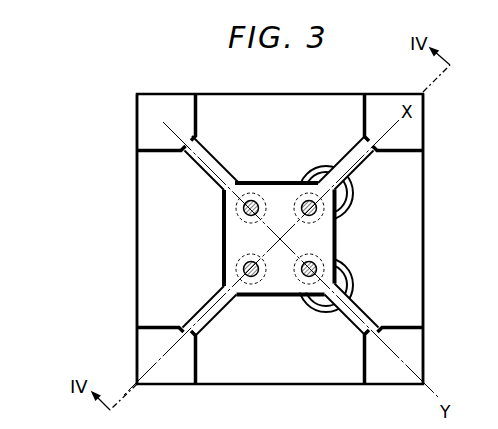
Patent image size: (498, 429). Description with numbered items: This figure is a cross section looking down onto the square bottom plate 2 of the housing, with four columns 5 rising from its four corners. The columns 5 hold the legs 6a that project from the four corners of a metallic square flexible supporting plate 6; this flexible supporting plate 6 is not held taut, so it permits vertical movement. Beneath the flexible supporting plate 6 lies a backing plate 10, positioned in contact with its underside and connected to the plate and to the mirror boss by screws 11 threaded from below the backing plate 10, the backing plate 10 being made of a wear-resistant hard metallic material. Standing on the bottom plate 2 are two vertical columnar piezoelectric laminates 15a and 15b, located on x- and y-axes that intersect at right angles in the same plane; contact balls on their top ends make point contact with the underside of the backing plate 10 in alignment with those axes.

The square bottom plate 2 is at (415, 209).
The columns 5 is at (130, 123).
The flexible supporting plate 6 is at (278, 181).
The legs 6a is at (208, 152).
The backing plate 10 is at (280, 297).
The screws 11 is at (302, 209).
The piezoelectric laminate 15a is at (318, 164).
The piezoelectric laminate 15b is at (355, 276).